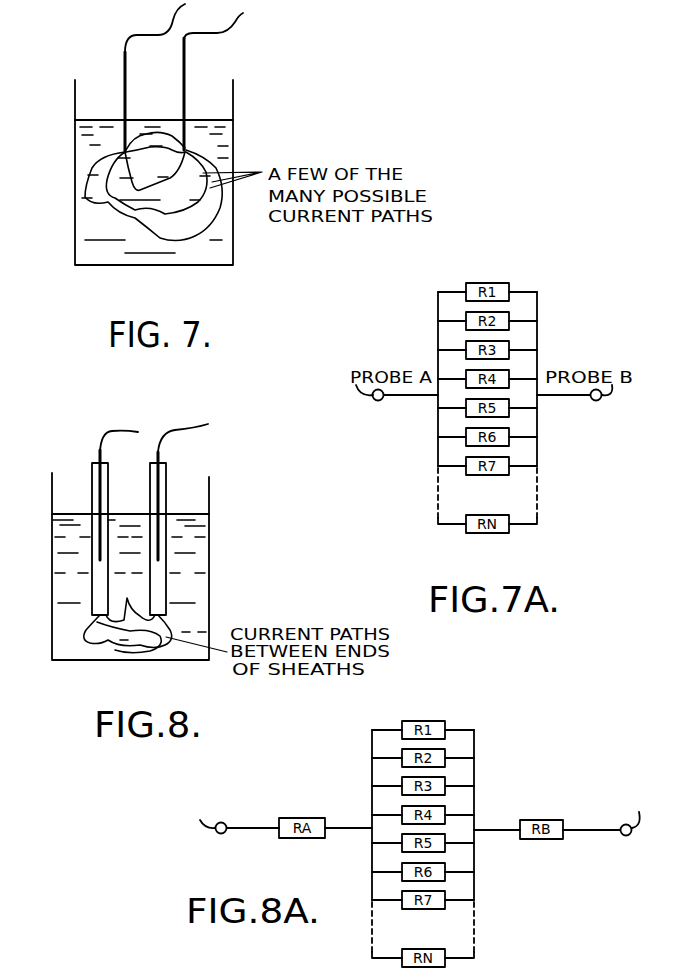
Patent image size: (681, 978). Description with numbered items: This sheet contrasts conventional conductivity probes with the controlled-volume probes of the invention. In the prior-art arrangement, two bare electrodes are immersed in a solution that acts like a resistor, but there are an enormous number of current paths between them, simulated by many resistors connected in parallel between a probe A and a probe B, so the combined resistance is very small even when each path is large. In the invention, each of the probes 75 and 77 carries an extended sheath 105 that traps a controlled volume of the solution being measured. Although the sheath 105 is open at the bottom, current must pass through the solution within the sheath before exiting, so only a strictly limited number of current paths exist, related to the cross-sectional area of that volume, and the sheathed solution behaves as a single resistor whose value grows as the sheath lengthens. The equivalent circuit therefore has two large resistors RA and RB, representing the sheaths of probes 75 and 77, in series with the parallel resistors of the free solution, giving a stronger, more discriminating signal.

In FIG. 8, the probe 75 is at (93, 473).
In FIG. 8A, the probe 75 is at (234, 808).
In FIG. 8, the probe 77 is at (167, 474).
In FIG. 8A, the probe 77 is at (601, 804).
In FIG. 8, the extended sheath 105 is at (92, 589).